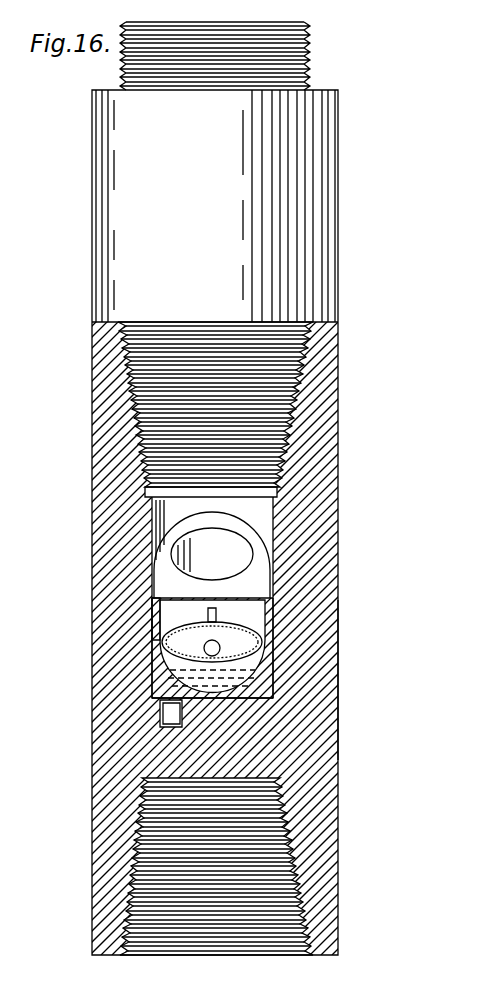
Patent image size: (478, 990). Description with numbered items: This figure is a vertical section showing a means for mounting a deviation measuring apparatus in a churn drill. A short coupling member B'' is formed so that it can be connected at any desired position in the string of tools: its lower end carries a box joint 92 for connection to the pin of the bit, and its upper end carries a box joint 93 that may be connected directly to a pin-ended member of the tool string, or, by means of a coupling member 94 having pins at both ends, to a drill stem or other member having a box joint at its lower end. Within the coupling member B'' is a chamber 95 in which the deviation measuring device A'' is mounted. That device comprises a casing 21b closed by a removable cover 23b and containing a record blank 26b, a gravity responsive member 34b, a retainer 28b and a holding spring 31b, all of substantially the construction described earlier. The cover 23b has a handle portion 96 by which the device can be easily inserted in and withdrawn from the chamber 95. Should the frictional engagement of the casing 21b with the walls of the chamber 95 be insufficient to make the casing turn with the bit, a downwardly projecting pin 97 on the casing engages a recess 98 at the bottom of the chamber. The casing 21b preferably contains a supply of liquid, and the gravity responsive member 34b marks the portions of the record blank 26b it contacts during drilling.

The coupling member 94 is at (320, 202).
The box joint 93 is at (303, 374).
The handle portion 96 is at (240, 527).
The removable cover 23b is at (237, 597).
The holding spring 31b is at (158, 604).
The retainer 28b is at (165, 655).
The gravity responsive member 34b is at (222, 648).
The chamber 95 is at (273, 660).
The deviation measuring device A'' is at (87, 648).
The coupling member B'' is at (351, 680).
The record blank 26b is at (240, 658).
The casing 21b is at (160, 706).
The downwardly projecting pin 97 is at (160, 716).
The recess 98 is at (160, 730).
The box joint 92 is at (280, 807).